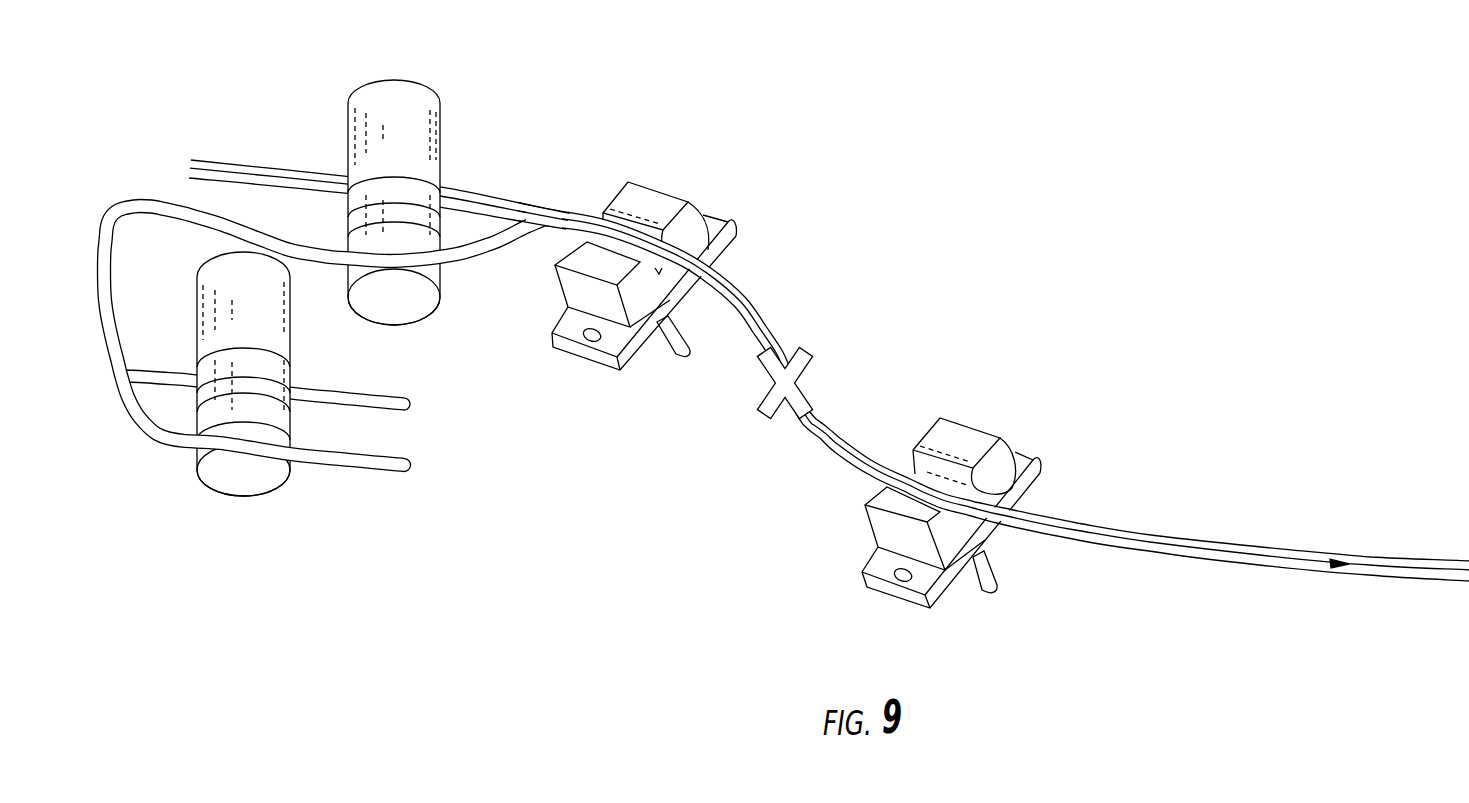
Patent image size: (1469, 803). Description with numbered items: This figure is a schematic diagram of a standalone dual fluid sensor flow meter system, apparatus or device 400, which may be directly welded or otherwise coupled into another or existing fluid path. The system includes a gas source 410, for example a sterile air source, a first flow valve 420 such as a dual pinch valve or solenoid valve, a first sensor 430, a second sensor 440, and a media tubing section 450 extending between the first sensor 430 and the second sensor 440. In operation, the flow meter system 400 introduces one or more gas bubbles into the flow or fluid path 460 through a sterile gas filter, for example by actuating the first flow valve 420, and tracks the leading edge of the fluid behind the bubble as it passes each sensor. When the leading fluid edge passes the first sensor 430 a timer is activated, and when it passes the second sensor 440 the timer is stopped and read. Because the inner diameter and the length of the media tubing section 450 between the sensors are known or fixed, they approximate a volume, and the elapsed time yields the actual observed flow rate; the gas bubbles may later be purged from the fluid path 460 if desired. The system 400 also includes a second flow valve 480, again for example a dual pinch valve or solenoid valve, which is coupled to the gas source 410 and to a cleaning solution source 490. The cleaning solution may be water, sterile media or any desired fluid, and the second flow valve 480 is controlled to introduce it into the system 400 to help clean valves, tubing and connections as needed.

The standalone flow meter system 400 is at (837, 227).
The gas source 410 is at (337, 345).
The first flow valve 420 is at (427, 98).
The first sensor 430 is at (708, 223).
The second sensor 440 is at (1010, 455).
The media tubing section 450 is at (840, 403).
The flow or fluid path 460 is at (492, 180).
The second flow valve 480 is at (237, 497).
The cleaning solution source 490 is at (287, 398).